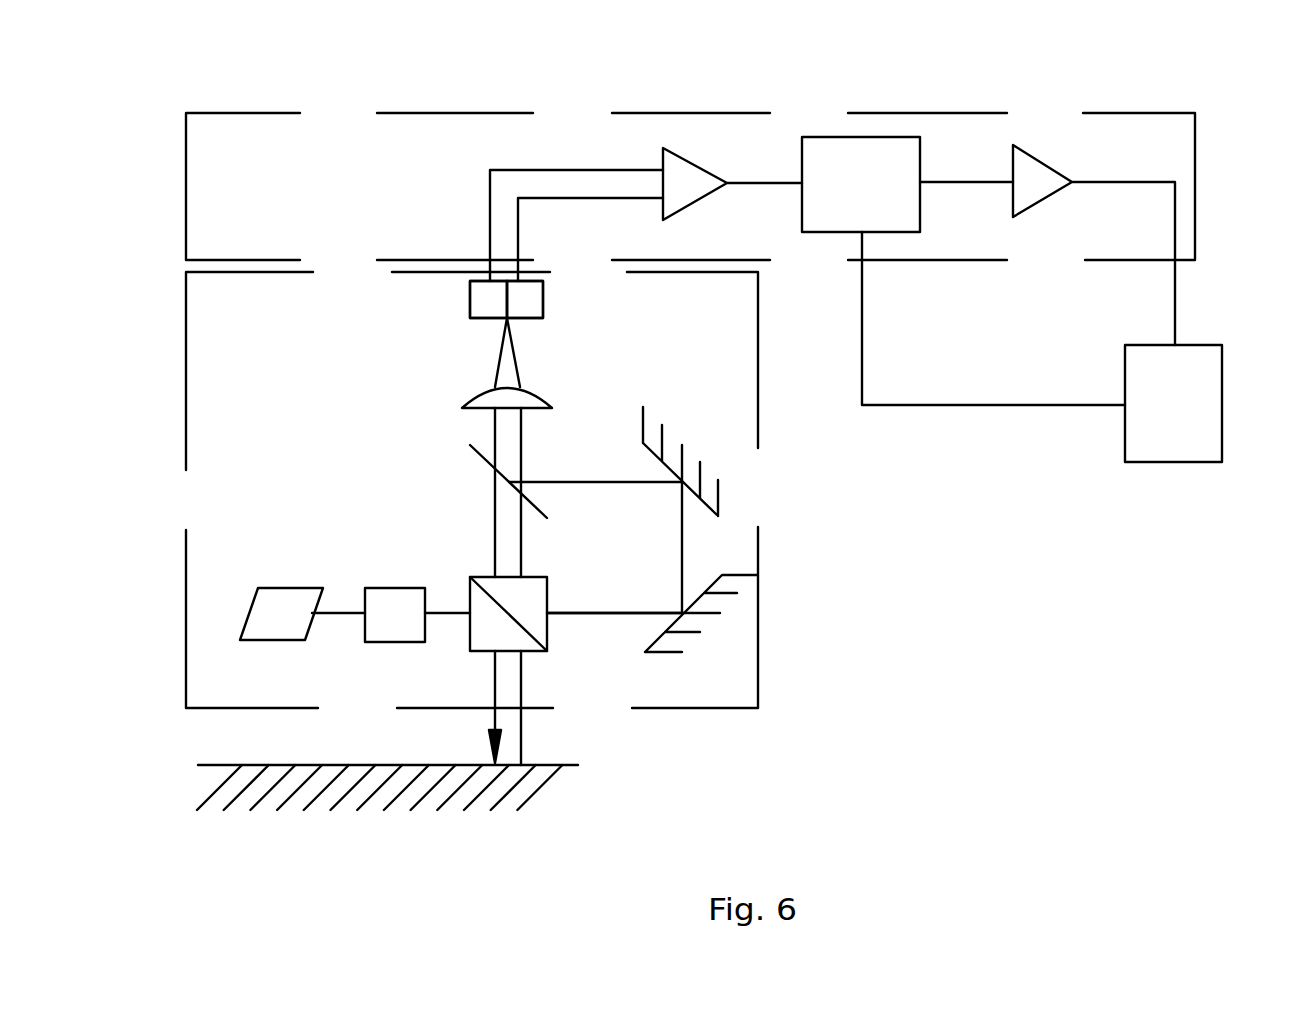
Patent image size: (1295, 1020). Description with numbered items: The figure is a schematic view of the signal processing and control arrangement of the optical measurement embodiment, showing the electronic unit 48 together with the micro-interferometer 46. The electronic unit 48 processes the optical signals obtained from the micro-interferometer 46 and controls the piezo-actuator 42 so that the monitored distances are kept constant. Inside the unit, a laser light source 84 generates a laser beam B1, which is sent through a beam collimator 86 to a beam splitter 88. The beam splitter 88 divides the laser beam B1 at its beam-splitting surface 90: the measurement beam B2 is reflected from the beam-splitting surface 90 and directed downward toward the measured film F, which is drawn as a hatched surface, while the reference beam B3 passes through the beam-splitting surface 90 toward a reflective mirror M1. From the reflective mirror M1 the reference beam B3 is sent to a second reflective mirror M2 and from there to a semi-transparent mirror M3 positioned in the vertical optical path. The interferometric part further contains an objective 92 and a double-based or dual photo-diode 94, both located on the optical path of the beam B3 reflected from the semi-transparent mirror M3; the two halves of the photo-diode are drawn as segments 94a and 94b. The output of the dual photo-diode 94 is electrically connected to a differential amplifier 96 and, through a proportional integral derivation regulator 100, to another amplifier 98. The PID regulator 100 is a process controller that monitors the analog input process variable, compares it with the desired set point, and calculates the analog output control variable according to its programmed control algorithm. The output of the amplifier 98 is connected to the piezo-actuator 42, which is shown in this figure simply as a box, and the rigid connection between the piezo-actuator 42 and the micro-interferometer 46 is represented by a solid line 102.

The piezo-actuator 42 is at (1185, 462).
The micro-interferometer 46 is at (187, 358).
The electronic unit 48 is at (1200, 190).
The laser light source 84 is at (280, 641).
The beam collimator 86 is at (397, 643).
The beam splitter 88 is at (523, 652).
The beam-splitting surface 90 is at (470, 577).
The objective 92 is at (540, 395).
The dual photo-diode 94 is at (479, 279).
The first detector segment 94a is at (470, 315).
The second detector segment 94b is at (527, 295).
The differential amplifier 96 is at (703, 170).
The amplifier 98 is at (1028, 155).
The proportional integral derivation regulator 100 is at (857, 137).
The solid line 102 is at (1022, 405).
The reflective mirror M1 is at (695, 597).
The reflective mirror M2 is at (695, 525).
The semi-transparent mirror M3 is at (488, 463).
The laser beam B1 is at (345, 615).
The measurement beam B2 is at (492, 693).
The reference beam B3 is at (607, 613).
The measured film F is at (223, 765).